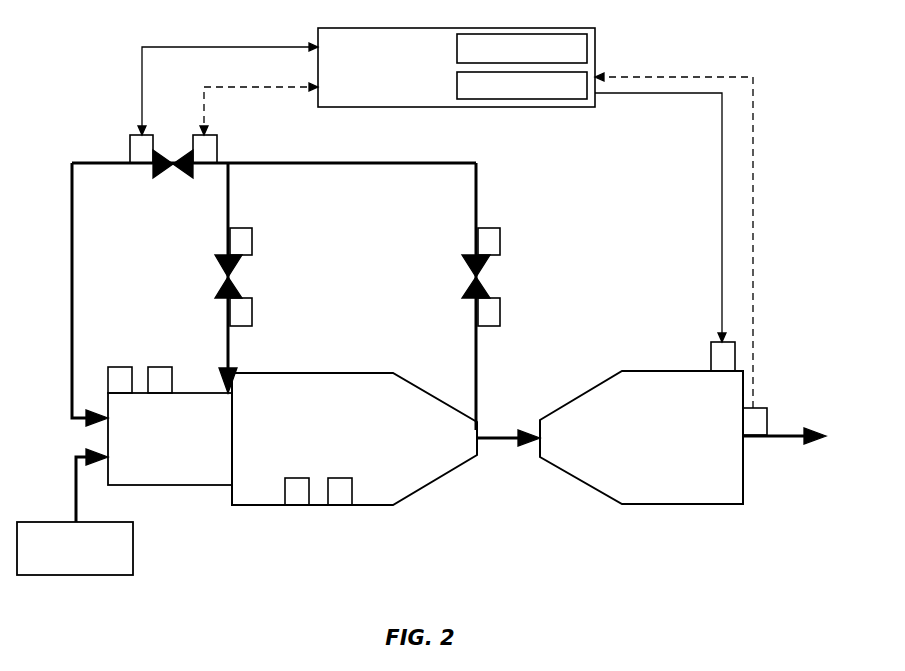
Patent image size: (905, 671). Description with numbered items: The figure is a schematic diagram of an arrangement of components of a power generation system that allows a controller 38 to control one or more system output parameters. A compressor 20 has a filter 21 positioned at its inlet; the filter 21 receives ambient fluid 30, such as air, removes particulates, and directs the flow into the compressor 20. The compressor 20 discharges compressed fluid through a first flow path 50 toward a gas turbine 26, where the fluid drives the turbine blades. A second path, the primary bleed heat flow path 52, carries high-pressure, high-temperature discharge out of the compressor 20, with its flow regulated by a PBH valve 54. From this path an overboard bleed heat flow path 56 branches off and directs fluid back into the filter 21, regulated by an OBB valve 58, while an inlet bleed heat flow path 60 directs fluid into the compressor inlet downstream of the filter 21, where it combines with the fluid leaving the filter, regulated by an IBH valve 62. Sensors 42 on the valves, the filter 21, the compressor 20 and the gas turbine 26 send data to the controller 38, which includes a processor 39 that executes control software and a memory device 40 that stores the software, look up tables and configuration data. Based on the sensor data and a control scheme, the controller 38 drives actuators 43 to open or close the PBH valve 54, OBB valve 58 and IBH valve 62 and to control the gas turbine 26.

The compressor 20 is at (334, 373).
The filter 21 is at (178, 486).
The gas turbine 26 is at (685, 504).
The ambient fluid 30 is at (134, 548).
The controller 38 is at (446, 28).
The processor 39 is at (525, 34).
The memory device 40 is at (525, 99).
The sensor 42 is at (218, 146).
The actuator 43 is at (130, 146).
The first flow path 50 is at (497, 441).
The primary bleed heat (PBH) flow path 52 is at (479, 172).
The PBH valve 54 is at (453, 269).
The overboard bleed heat (OBB) flow path 56 is at (102, 162).
The OBB valve 58 is at (163, 180).
The inlet bleed heat (IBH) flow path 60 is at (226, 196).
The IBH valve 62 is at (205, 269).